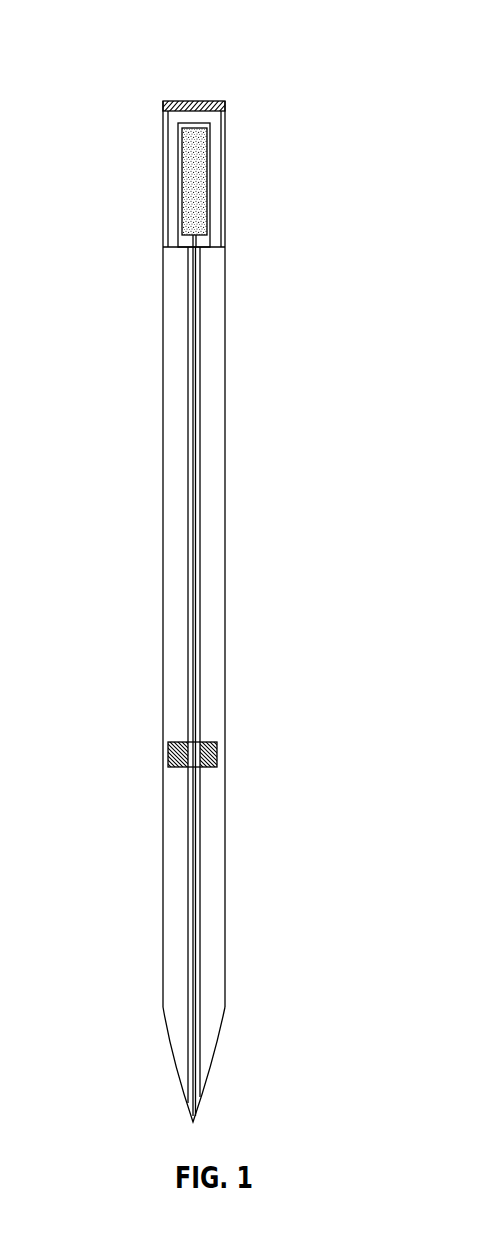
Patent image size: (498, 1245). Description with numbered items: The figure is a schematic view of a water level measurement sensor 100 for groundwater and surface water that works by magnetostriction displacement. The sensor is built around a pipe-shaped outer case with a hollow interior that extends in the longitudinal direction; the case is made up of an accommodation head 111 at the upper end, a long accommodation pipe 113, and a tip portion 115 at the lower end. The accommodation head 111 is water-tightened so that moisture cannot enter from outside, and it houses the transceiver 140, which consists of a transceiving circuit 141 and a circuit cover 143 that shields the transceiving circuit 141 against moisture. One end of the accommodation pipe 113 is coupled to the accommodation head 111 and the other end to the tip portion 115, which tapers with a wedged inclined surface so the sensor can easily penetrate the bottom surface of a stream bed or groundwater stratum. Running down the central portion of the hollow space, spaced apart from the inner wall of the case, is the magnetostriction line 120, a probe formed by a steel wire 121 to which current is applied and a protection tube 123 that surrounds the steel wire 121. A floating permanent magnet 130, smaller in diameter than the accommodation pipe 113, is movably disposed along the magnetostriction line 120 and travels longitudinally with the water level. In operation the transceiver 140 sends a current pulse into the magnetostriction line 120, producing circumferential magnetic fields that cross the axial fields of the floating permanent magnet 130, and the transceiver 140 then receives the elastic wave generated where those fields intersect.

The water level measurement sensor 100 is at (117, 87).
The accommodation head 111 is at (163, 185).
The accommodation pipe 113 is at (163, 568).
The tip portion 115 is at (175, 1066).
The magnetostriction line 120 is at (271, 681).
The steel wire 121 is at (195, 617).
The protection tube 123 is at (200, 669).
The floating permanent magnet 130 is at (218, 752).
The transceiver 140 is at (266, 185).
The transceiving circuit 141 is at (203, 150).
The circuit cover 143 is at (212, 203).